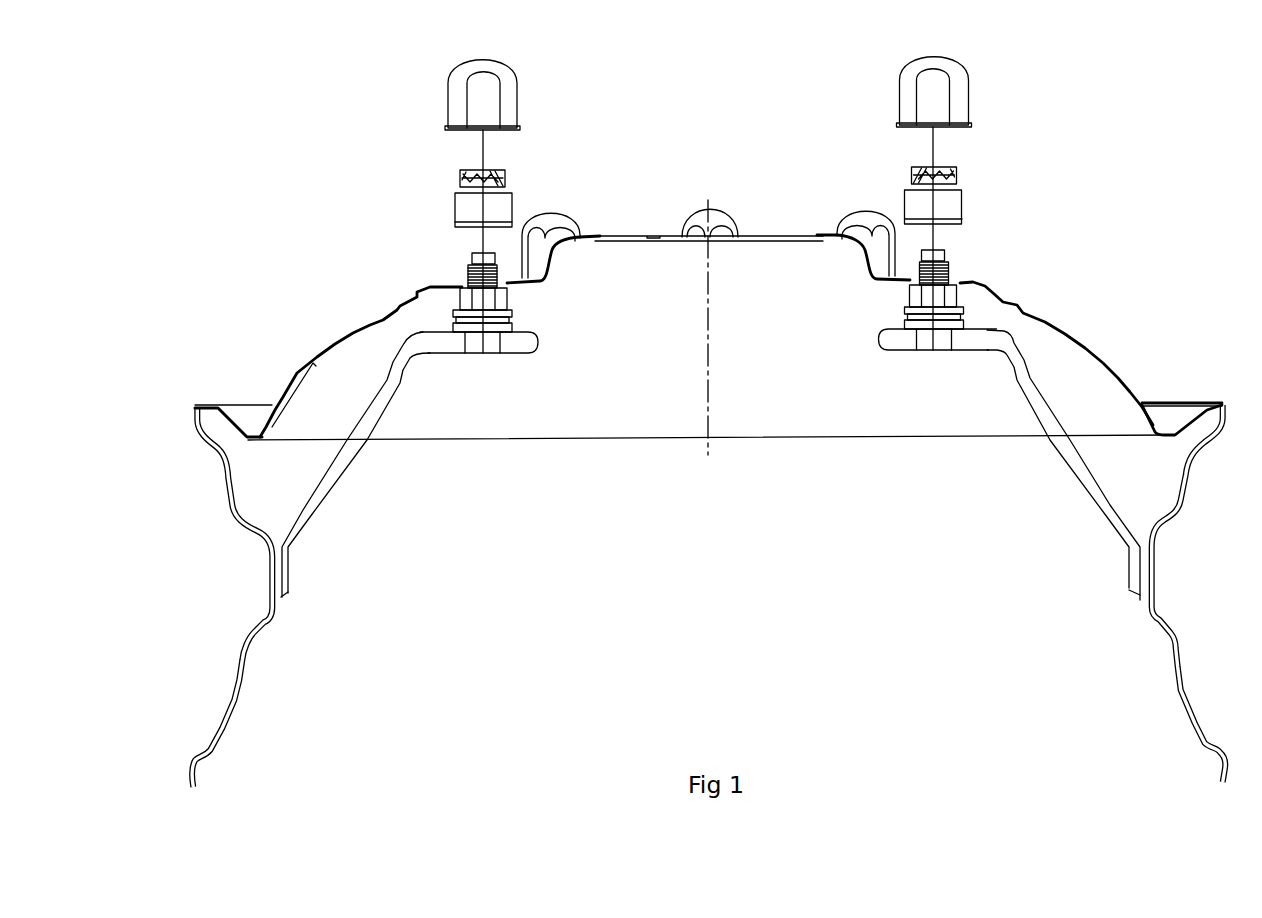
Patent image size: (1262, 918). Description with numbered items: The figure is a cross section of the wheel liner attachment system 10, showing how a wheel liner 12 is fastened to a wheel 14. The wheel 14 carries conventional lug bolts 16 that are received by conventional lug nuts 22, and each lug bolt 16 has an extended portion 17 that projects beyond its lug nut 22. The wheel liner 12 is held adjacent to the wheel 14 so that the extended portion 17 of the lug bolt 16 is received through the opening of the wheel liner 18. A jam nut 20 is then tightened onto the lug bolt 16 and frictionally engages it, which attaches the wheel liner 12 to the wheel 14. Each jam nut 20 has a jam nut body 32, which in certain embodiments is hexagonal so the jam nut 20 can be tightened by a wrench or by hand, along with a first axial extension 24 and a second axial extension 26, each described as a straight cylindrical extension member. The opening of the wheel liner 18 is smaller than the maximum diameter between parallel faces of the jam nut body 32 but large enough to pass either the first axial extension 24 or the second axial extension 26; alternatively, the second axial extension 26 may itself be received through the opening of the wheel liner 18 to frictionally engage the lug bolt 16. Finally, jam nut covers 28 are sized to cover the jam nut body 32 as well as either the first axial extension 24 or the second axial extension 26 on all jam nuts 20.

The wheel liner attachment system 10 is at (516, 502).
The wheel liner 12 is at (320, 348).
The wheel 14 is at (223, 498).
The lug bolt 16 is at (467, 268).
The extended portion 17 is at (470, 258).
The opening of the wheel liner 18 is at (507, 285).
The jam nut 20 is at (528, 197).
The lug nut 22 is at (512, 313).
The first axial extension 24 is at (458, 227).
The second axial extension 26 is at (458, 185).
The jam nut cover 28 is at (520, 100).
The jam nut body 32 is at (453, 213).